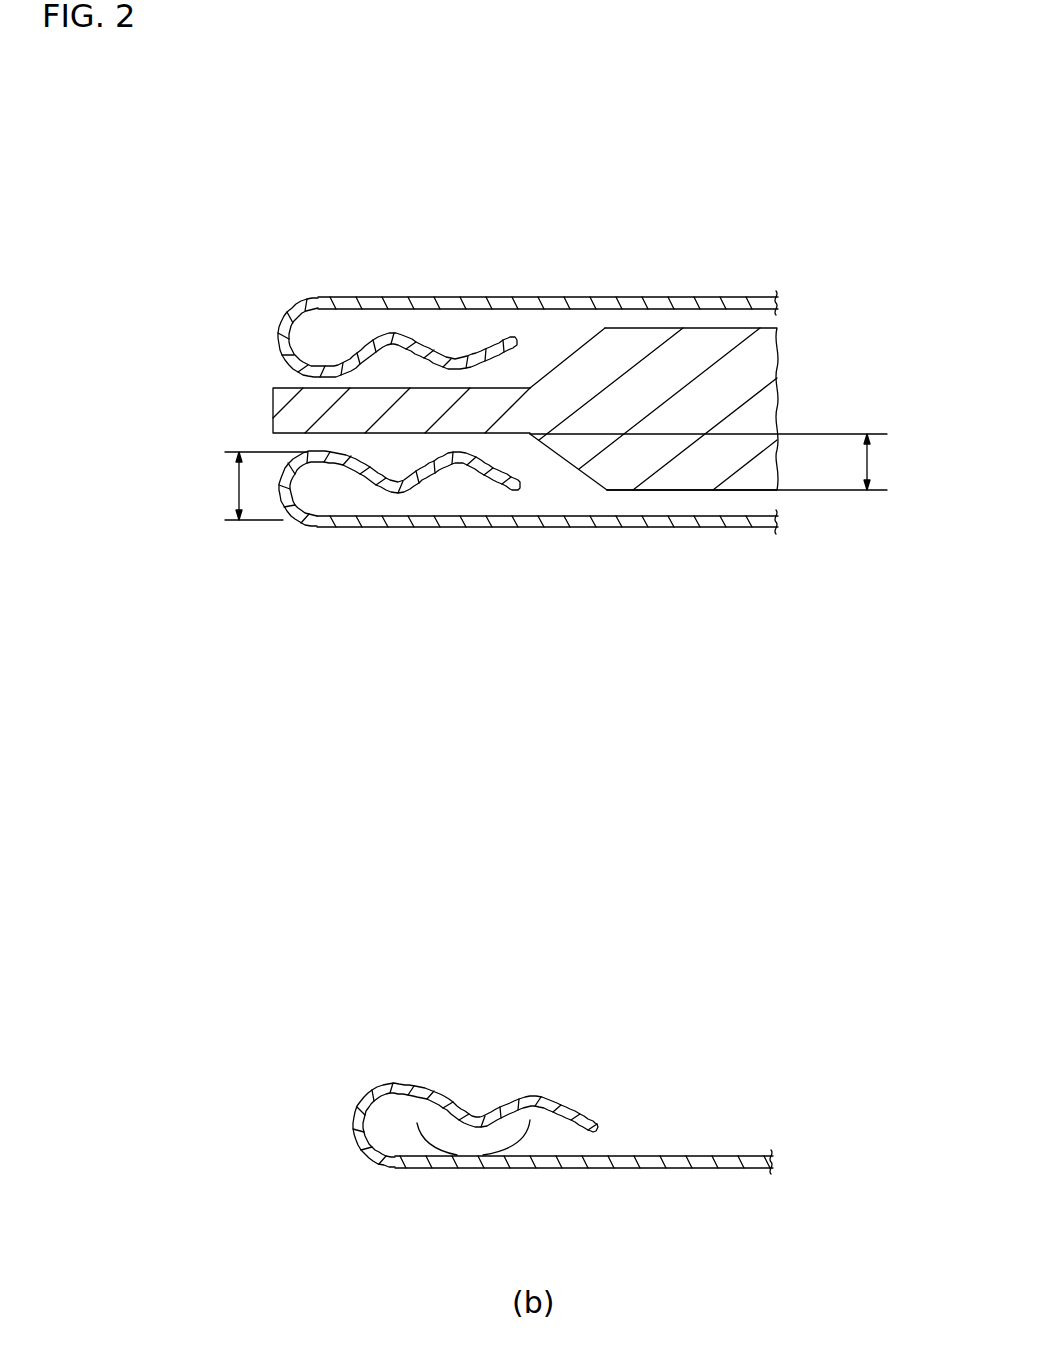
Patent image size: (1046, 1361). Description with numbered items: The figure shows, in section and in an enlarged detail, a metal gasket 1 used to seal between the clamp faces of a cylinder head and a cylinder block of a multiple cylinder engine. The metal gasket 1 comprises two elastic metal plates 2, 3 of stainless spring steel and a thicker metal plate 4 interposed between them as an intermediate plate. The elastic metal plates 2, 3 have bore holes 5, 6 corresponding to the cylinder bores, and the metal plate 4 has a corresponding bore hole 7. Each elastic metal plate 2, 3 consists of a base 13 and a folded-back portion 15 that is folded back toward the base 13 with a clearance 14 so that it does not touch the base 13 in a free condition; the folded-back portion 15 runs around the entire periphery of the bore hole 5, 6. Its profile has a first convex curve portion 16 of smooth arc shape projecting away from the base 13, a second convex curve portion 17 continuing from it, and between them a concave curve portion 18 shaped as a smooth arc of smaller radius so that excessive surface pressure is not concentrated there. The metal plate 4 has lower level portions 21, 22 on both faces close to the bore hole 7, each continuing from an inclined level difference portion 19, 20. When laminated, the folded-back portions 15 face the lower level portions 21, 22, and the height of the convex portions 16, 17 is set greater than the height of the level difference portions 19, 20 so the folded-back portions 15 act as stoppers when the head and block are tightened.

The metal gasket 1 is at (670, 257).
The elastic metal plate 2 is at (513, 297).
The elastic metal plate 3 is at (470, 527).
The metal plate 4 is at (682, 490).
The bore hole 5 is at (273, 345).
The bore hole 6 is at (275, 497).
The bore hole 7 is at (273, 416).
The base 13 is at (558, 1168).
The clearance 14 is at (483, 1155).
The folded-back portion 15 is at (592, 1064).
The first convex curve portion 16 is at (388, 1088).
The second convex curve portion 17 is at (540, 1093).
The concave curve portion 18 is at (480, 1125).
The level difference portion 19 is at (567, 357).
The level difference portion 20 is at (578, 470).
The lower level portion 21 is at (389, 388).
The lower level portion 22 is at (378, 435).